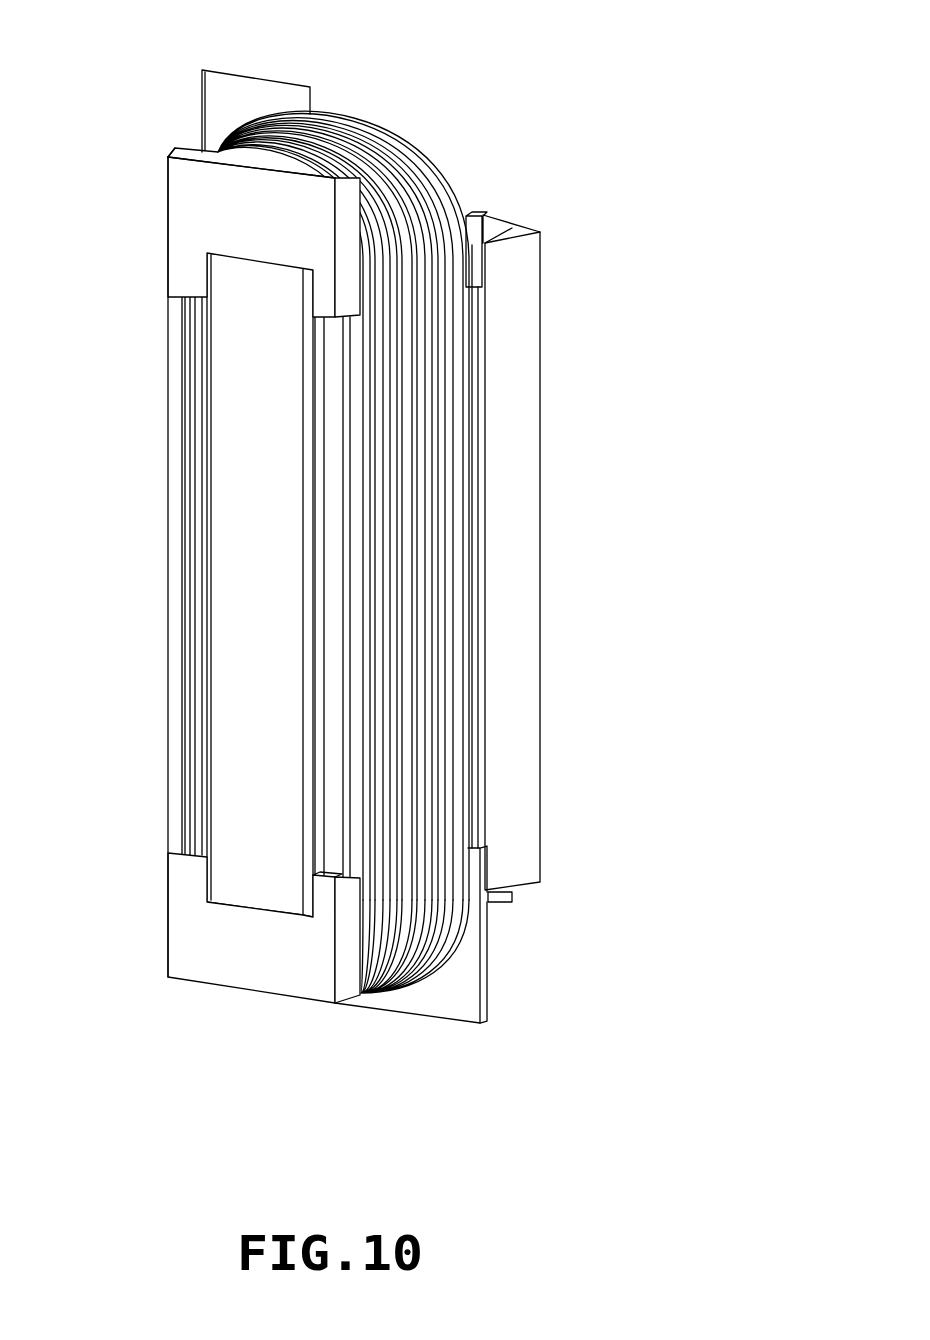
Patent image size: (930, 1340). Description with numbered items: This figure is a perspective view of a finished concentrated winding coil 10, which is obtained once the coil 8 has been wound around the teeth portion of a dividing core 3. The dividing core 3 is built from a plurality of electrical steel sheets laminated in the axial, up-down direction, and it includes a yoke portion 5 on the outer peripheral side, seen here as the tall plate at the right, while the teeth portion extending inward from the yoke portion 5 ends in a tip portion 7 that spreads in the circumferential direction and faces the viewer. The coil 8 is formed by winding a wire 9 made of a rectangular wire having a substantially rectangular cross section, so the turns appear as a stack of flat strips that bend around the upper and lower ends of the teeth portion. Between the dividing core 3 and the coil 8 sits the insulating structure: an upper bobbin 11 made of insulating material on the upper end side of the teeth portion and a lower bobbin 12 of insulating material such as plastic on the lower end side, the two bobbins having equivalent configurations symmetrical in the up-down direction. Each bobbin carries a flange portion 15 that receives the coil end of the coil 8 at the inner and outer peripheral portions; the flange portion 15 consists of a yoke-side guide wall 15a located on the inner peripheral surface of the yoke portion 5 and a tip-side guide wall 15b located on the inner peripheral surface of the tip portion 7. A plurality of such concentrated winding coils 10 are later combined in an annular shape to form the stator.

The dividing core 3 is at (525, 218).
The yoke portion 5 is at (533, 490).
The tip portion 7 is at (225, 348).
The coil 8 is at (336, 513).
The wire 9 is at (438, 192).
The concentrated winding coil 10 is at (150, 585).
The upper bobbin 11 is at (162, 223).
The lower bobbin 12 is at (152, 973).
The flange portion 15 is at (175, 147).
The yoke-side guide wall 15a is at (260, 76).
The tip-side guide wall 15b is at (190, 182).